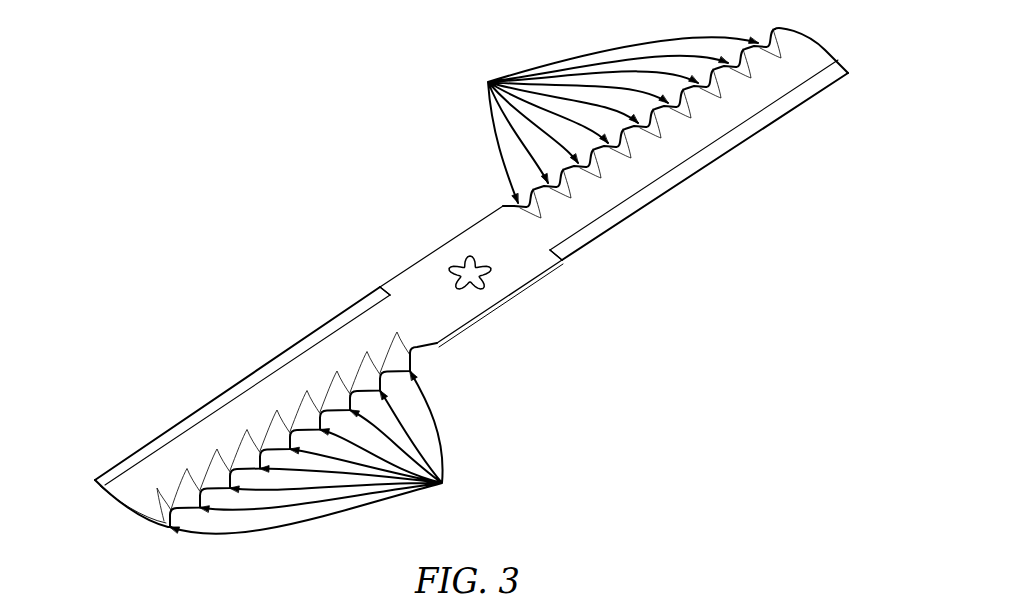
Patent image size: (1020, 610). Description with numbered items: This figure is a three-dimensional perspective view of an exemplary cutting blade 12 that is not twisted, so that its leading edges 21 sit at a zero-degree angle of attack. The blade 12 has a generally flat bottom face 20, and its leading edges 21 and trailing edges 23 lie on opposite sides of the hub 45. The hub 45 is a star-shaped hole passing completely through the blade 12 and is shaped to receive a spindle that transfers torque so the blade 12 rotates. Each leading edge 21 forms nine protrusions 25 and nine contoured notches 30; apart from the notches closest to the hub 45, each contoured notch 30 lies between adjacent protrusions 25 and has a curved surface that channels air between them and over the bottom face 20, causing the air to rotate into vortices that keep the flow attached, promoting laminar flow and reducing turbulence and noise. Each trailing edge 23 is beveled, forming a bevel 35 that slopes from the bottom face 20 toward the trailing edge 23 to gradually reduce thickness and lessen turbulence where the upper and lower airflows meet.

The blade 12 is at (272, 132).
The bottom face 20 is at (207, 343).
The leading edges 21 is at (623, 43).
The trailing edges 23 is at (788, 134).
The protrusions 25 is at (312, 452).
The contoured notches 30 is at (617, 120).
The bevel 35 is at (367, 302).
The hub 45 is at (465, 267).